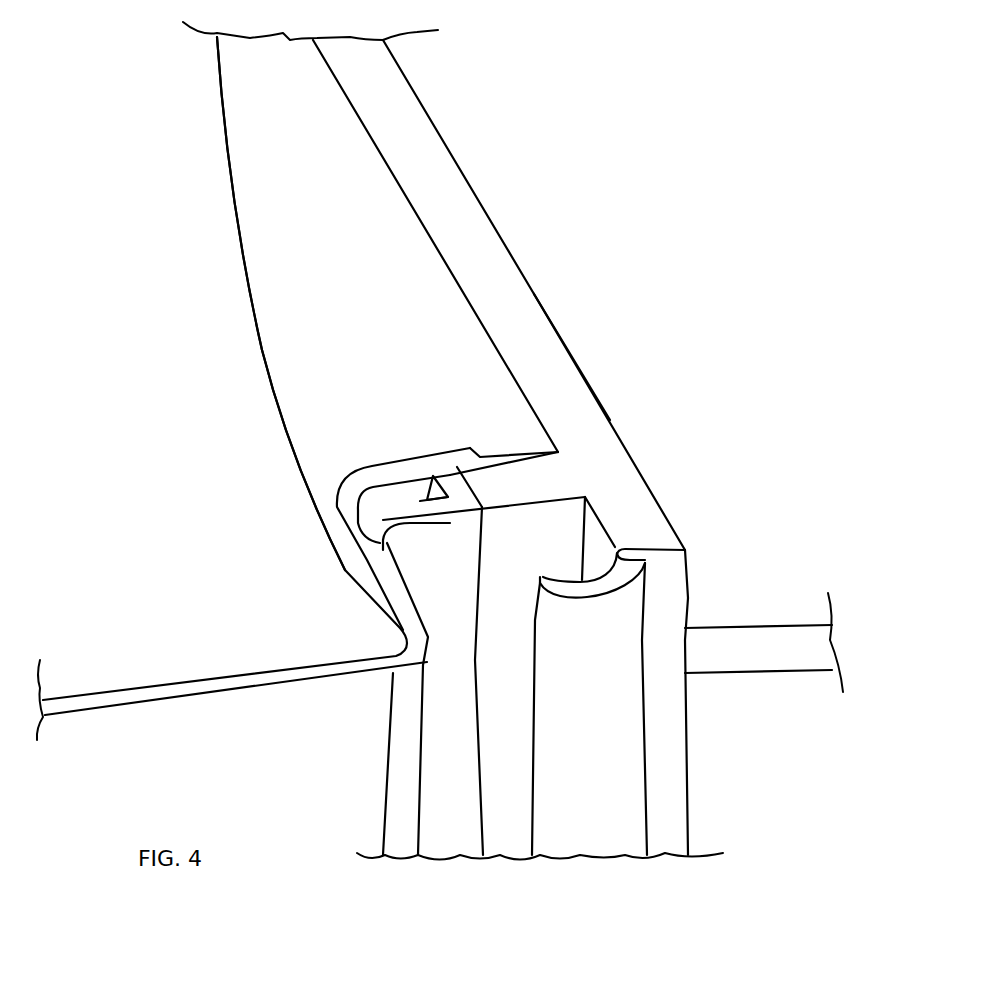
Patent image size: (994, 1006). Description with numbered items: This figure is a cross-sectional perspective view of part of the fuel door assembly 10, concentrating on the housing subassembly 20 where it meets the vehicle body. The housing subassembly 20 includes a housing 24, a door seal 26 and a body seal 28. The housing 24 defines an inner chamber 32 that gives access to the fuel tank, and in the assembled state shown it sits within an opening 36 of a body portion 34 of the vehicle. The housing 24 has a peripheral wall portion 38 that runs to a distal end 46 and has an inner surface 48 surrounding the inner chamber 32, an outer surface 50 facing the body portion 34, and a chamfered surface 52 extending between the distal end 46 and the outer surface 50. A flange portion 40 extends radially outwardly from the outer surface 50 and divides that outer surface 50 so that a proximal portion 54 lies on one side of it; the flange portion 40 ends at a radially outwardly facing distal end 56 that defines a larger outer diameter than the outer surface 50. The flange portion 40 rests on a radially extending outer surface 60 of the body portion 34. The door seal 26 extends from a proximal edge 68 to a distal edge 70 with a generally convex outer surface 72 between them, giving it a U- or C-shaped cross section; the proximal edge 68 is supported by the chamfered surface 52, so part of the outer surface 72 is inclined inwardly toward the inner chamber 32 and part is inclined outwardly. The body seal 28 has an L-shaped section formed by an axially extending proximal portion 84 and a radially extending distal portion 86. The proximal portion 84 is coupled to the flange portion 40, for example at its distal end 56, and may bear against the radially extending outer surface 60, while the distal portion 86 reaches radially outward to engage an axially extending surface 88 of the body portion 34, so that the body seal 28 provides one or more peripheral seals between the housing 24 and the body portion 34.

The fuel door assembly 10 is at (175, 82).
The housing subassembly 20 is at (562, 331).
The housing 24 is at (278, 398).
The door seal 26 is at (610, 747).
The body seal 28 is at (447, 728).
The inner chamber 32 is at (617, 422).
The body portion 34 is at (182, 693).
The opening 36 is at (480, 452).
The wall portion 38 is at (427, 200).
The flange portion 40 is at (528, 473).
The distal end 46 is at (670, 720).
The inner surface 48 is at (480, 197).
The outer surface 50 is at (260, 193).
The chamfered surface 52 is at (628, 552).
The proximal portion 54 is at (306, 429).
The distal end 56 is at (473, 495).
The radially extending outer surface 60 is at (403, 539).
The proximal edge 68 is at (685, 548).
The distal edge 70 is at (542, 580).
The outer surface 72 is at (589, 709).
The proximal portion 84 is at (458, 485).
The distal portion 86 is at (428, 510).
The axially extending surface 88 is at (412, 595).